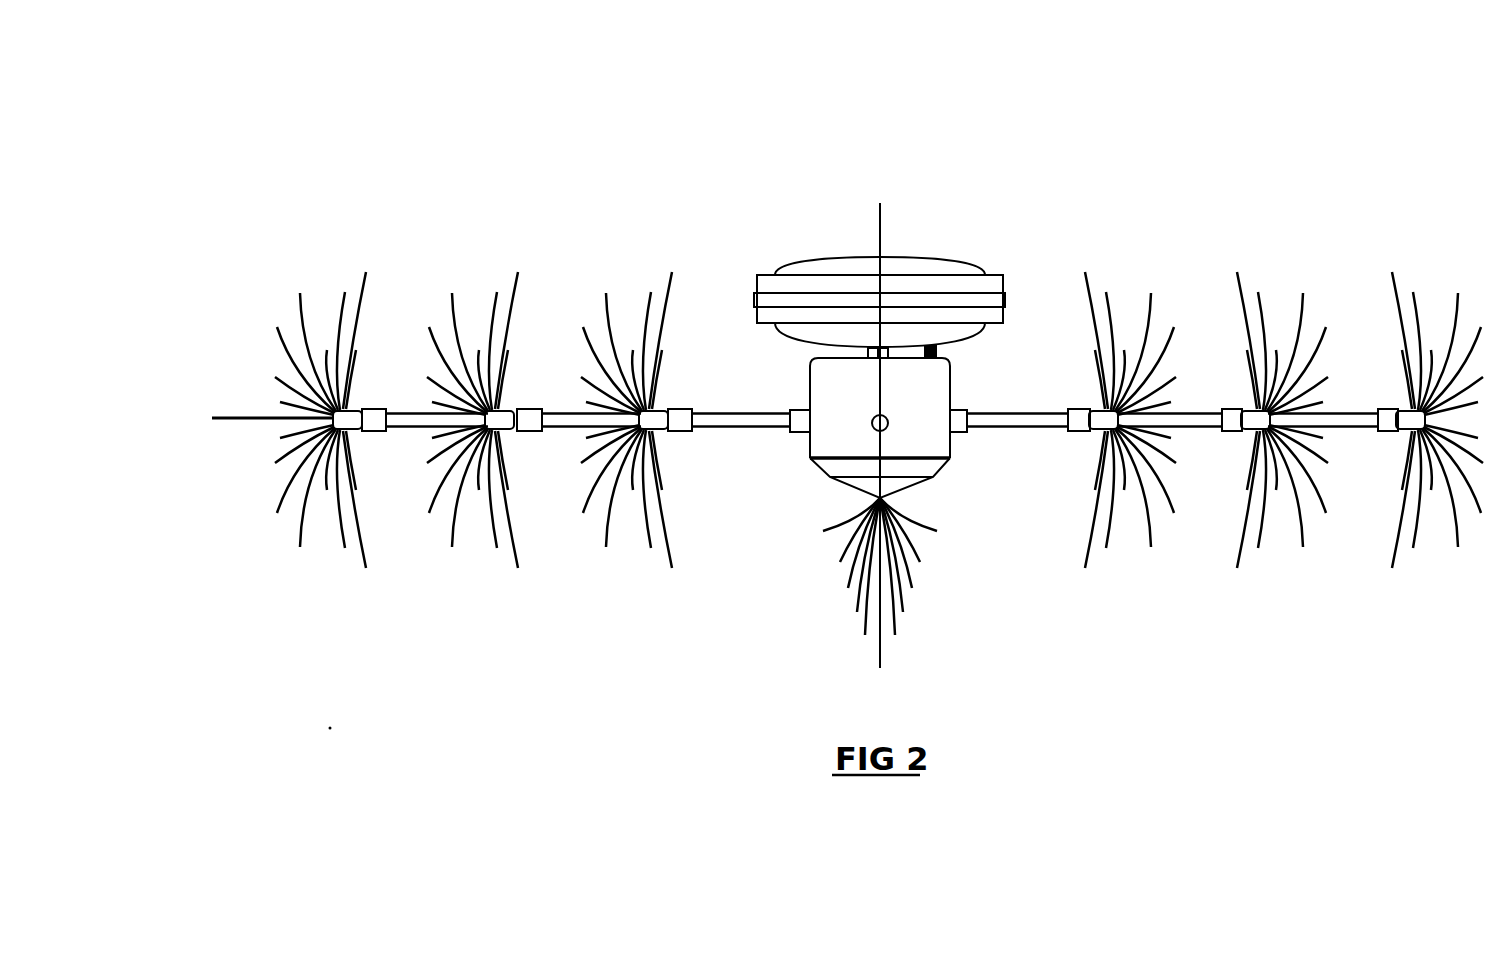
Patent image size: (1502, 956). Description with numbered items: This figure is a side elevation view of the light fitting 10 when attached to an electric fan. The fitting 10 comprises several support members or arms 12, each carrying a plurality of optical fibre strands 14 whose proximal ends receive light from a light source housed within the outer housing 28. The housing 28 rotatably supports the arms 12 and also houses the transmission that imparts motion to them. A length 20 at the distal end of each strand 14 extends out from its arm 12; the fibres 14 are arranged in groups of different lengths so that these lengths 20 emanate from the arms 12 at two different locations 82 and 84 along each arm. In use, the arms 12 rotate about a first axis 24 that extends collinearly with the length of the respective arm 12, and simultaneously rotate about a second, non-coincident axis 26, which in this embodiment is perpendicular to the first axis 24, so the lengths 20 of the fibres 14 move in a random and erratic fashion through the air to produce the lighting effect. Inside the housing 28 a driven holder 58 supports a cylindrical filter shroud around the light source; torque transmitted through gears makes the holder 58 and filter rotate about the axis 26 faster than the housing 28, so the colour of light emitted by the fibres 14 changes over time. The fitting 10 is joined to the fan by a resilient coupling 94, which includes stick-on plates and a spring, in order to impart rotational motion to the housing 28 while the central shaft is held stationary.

The light fitting 10 is at (954, 245).
The support member or arm 12 is at (882, 528).
The optical fibre strand 14 is at (840, 326).
The length at the distal end of each strand 20 is at (435, 394).
The first axis 24 is at (246, 364).
The second axis 26 is at (922, 599).
The outer housing 28 is at (820, 422).
The driven holder 58 is at (930, 566).
The location (fibre exit location) 82 is at (903, 295).
The location (fibre exit location) 84 is at (880, 315).
The resilient coupling 94 is at (958, 273).
The axis E is at (968, 266).